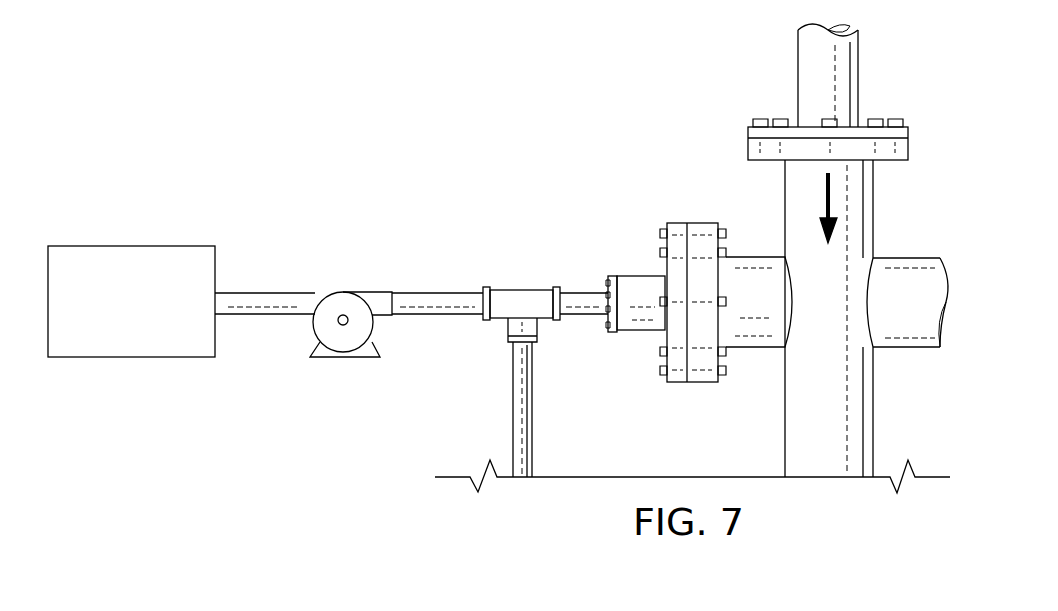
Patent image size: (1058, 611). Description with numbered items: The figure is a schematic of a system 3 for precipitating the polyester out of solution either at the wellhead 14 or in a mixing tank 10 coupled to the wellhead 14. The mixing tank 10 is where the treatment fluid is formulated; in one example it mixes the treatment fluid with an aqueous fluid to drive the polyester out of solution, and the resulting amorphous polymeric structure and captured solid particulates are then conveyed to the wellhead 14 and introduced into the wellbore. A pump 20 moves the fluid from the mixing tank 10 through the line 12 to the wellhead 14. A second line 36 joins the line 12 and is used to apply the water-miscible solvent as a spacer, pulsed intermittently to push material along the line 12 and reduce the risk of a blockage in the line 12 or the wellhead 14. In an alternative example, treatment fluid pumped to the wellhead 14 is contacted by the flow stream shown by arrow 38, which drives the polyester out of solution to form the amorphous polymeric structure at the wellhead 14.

The system 3 is at (450, 140).
The mixing tank 10 is at (130, 246).
The line 12 is at (440, 292).
The wellhead 14 is at (873, 210).
The pump 20 is at (345, 292).
The line 36 is at (513, 408).
The arrow 38 is at (826, 212).